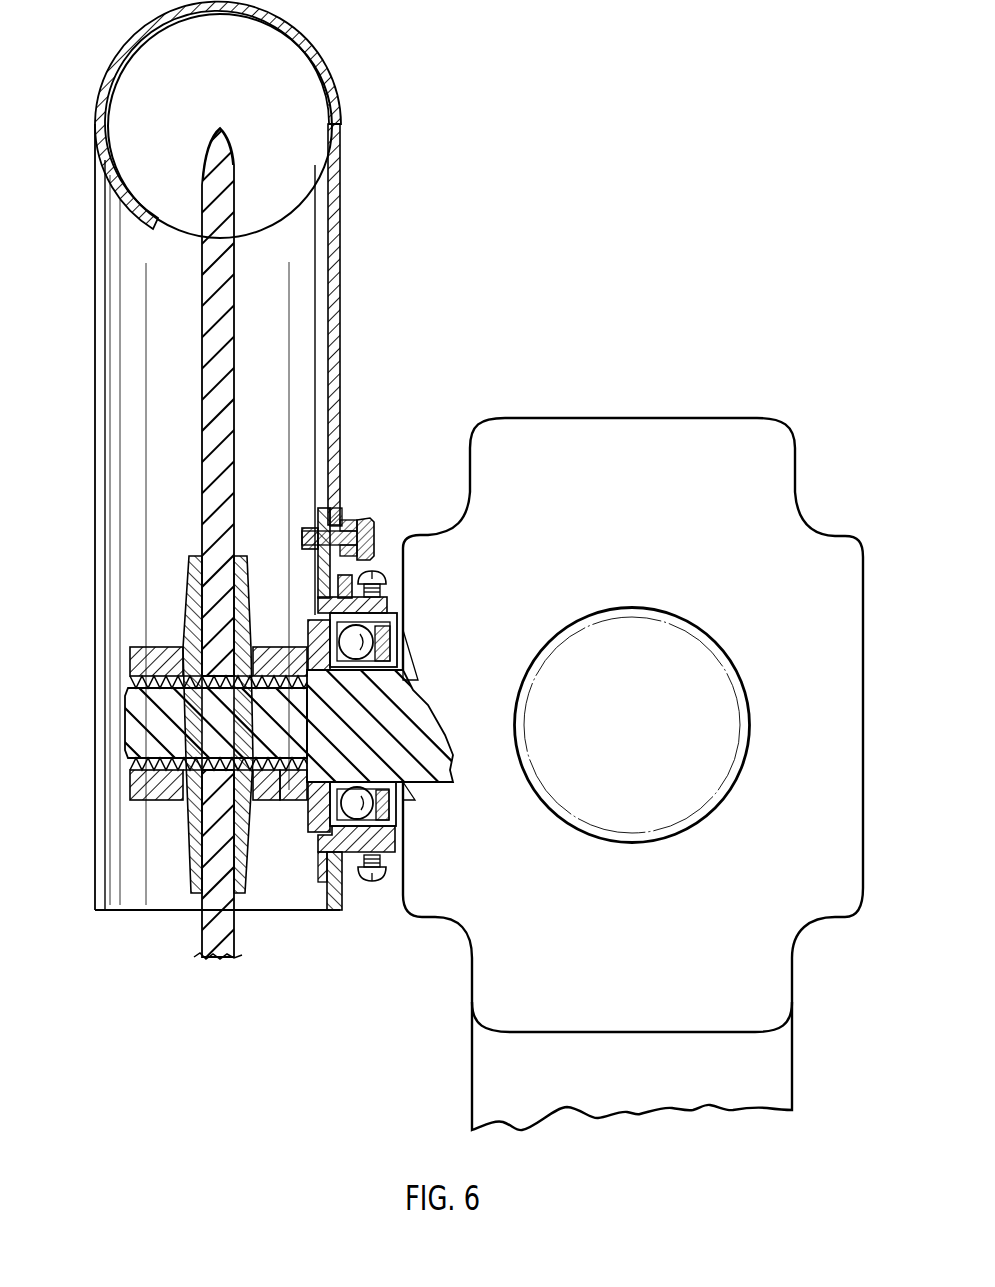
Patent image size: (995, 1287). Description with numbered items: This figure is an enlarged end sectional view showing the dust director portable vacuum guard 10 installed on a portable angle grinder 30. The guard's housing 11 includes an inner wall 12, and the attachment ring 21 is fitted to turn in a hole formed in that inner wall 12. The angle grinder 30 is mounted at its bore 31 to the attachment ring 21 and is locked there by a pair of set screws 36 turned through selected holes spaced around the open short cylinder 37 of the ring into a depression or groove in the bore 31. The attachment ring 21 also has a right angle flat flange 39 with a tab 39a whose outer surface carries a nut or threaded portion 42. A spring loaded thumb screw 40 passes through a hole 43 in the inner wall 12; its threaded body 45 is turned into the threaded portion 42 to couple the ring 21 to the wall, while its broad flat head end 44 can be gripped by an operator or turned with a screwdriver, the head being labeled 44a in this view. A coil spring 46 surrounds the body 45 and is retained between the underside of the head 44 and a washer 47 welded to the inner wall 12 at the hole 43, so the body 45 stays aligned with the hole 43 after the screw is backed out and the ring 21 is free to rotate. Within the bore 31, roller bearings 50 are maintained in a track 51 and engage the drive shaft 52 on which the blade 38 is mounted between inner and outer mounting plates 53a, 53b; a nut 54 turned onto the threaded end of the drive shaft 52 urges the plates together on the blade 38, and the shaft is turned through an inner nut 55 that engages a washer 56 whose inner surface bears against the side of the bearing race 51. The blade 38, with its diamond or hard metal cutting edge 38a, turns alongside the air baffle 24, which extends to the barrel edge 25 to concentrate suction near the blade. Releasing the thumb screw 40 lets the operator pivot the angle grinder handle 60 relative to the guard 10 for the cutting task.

The dust director portable vacuum guard 10 is at (482, 369).
The angle grinder mounting and turning housing 11 is at (101, 931).
The inner wall 12 is at (322, 393).
The attachment ring 21 is at (404, 583).
The air baffle 24 is at (130, 220).
The barrel edge 25 is at (172, 235).
The angle grinder 30 is at (831, 518).
The bore 31 is at (430, 781).
The set screw 36 is at (386, 590).
The open short cylinder 37 is at (342, 872).
The blade 38 is at (225, 357).
The cutting edge 38a is at (227, 145).
The right angle flat flange 39 is at (325, 858).
The tab 39a is at (324, 587).
The thumb screw 40 is at (376, 478).
The nut or threaded portion 42 is at (318, 523).
The hole 43 is at (340, 515).
The head end 44 is at (372, 556).
The bolt head 44a is at (374, 540).
The threaded body 45 is at (302, 542).
The coil spring 46 is at (352, 520).
The washer 47 is at (330, 562).
The roller bearings 50 is at (397, 628).
The track 51 is at (360, 645).
The drive shaft 52 is at (163, 733).
The inner mounting plate 53a is at (240, 868).
The outer mounting plate 53b is at (187, 868).
The nut 54 is at (150, 805).
The inner nut 55 is at (264, 805).
The washer 56 is at (300, 805).
The angle grinder handle 60 is at (641, 737).